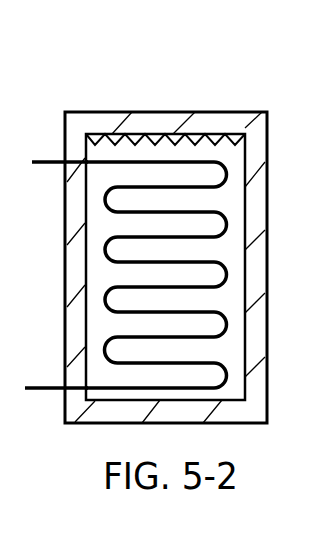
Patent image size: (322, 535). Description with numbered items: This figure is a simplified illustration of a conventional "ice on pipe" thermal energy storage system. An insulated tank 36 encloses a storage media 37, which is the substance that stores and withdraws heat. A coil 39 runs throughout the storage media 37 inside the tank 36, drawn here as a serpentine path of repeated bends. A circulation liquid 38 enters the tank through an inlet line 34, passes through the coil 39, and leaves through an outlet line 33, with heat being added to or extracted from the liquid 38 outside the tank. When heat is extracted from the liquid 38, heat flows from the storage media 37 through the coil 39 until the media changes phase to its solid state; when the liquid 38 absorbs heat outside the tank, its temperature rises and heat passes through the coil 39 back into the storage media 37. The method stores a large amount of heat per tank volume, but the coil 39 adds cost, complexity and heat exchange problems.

The outlet line 33 is at (40, 388).
The inlet line 34 is at (50, 163).
The insulated tank 36 is at (85, 112).
The storage media 37 is at (177, 153).
The circulation liquid 38 is at (205, 160).
The coil 39 is at (123, 152).